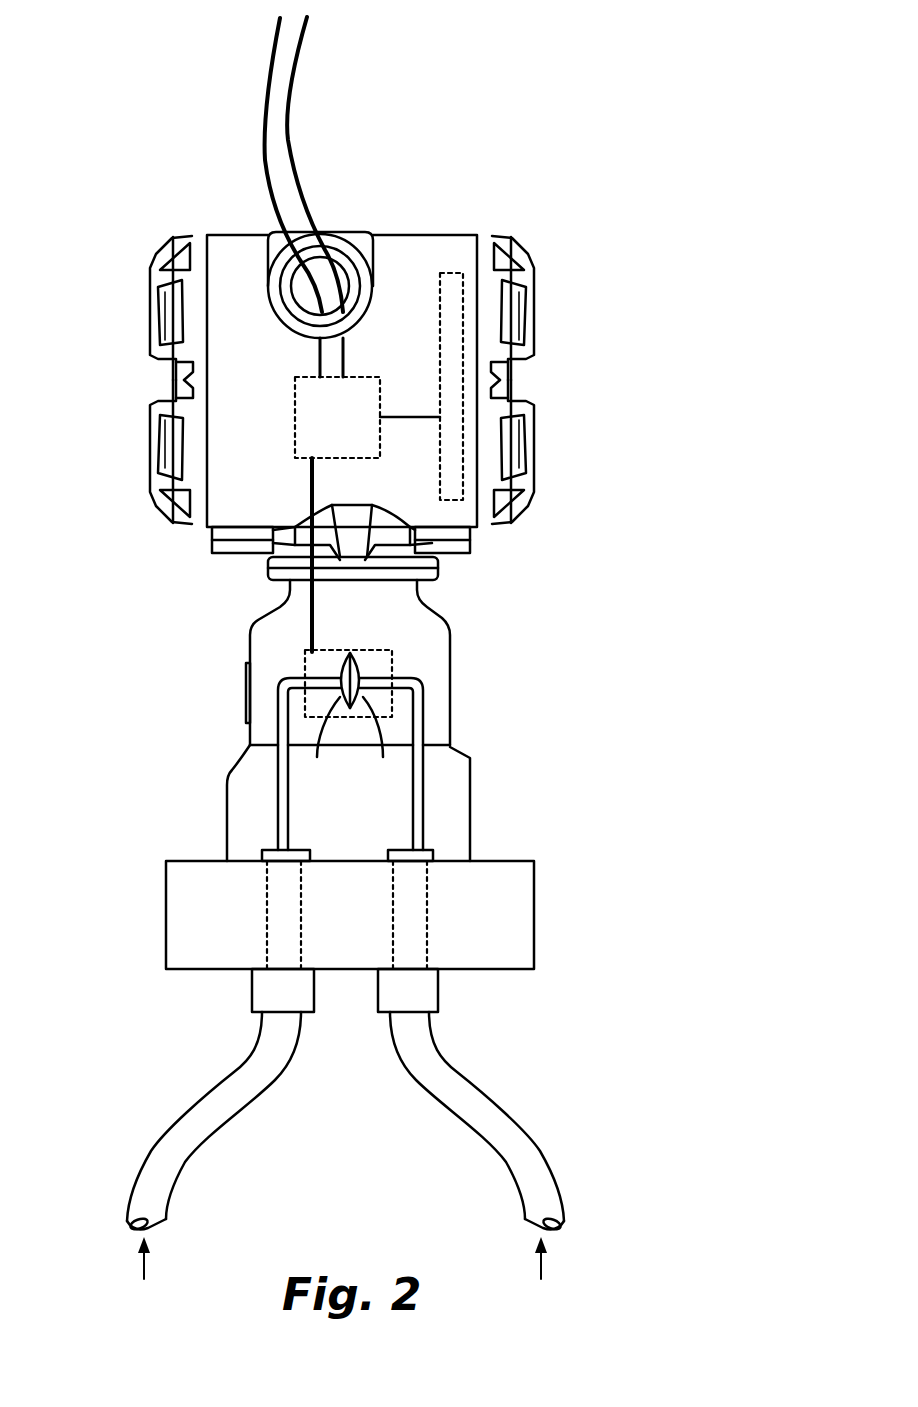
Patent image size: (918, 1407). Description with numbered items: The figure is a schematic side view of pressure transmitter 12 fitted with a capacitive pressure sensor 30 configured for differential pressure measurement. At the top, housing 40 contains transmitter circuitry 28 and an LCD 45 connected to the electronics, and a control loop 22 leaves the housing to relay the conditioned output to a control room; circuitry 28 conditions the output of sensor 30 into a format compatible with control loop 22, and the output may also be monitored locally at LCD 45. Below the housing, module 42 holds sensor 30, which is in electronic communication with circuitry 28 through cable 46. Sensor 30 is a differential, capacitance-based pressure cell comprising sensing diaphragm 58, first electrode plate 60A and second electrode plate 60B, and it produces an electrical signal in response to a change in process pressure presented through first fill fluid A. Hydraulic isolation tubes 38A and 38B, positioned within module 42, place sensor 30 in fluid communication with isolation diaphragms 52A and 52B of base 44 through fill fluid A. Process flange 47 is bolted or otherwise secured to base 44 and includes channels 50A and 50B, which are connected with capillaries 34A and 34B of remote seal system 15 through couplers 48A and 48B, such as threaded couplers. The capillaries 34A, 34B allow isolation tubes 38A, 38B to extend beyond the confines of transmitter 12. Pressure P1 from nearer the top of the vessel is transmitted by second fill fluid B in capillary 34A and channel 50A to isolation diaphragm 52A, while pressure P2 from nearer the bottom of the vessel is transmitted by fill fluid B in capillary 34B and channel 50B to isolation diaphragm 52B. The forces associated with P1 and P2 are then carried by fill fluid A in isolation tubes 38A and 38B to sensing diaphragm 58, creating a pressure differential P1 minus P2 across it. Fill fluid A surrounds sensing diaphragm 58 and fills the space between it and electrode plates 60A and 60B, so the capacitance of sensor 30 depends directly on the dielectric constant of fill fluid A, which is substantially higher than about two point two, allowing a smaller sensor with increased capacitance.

The pressure transmitter 12 is at (163, 191).
The control loop 22 is at (318, 95).
The housing 40 is at (460, 247).
The LCD 45 is at (452, 290).
The transmitter circuitry 28 is at (346, 429).
The cable 46 is at (310, 607).
The module 42 is at (410, 622).
The sensing diaphragm 58 is at (317, 665).
The capacitive pressure sensor 30 is at (380, 667).
The first hydraulic isolation tube 38A is at (280, 773).
The second hydraulic isolation tube 38B is at (423, 773).
The first electrode plate 60A is at (324, 744).
The second electrode plate 60B is at (387, 744).
The first isolation diaphragm 52A is at (267, 842).
The second isolation diaphragm 52B is at (420, 850).
The base 44 is at (460, 823).
The process flange 47 is at (510, 863).
The first channel 50A is at (279, 949).
The second channel 50B is at (416, 941).
The first coupler 48A is at (262, 1011).
The second coupler 48B is at (432, 1007).
The first capillary 34A is at (153, 1170).
The second capillary 34B is at (541, 1174).
The remote seal system 15 is at (596, 1234).
The first fill fluid A is at (283, 803).
The second fill fluid B is at (234, 1099).
The first pressure P1 is at (141, 1273).
The second pressure P2 is at (542, 1273).